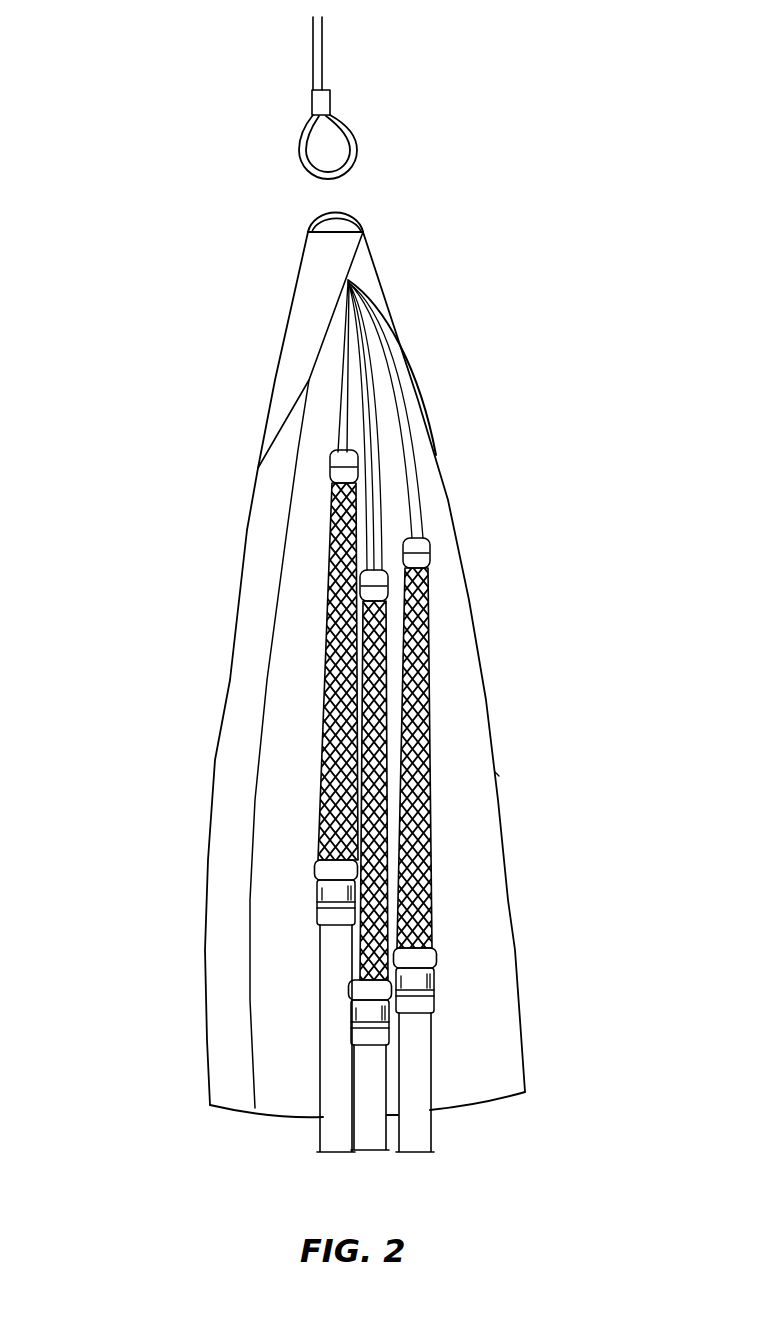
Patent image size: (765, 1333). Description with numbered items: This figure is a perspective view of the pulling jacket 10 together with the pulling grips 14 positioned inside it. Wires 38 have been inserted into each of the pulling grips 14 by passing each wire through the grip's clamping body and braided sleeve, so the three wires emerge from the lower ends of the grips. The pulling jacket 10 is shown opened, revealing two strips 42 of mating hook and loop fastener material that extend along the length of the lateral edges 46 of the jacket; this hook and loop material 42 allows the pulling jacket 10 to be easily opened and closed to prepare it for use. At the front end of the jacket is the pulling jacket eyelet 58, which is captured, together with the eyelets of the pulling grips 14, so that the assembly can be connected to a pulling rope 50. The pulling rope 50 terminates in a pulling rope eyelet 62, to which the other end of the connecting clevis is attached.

The pulling jacket 10 is at (335, 674).
The pulling grips 14 is at (427, 703).
The wires 38 is at (343, 1135).
The strips of mating hook and loop fastener material 42 is at (387, 302).
The lateral edges 46 is at (448, 505).
The pulling rope 50 is at (313, 53).
The pulling jacket eyelet 58 is at (357, 219).
The pulling rope eyelet 62 is at (348, 125).